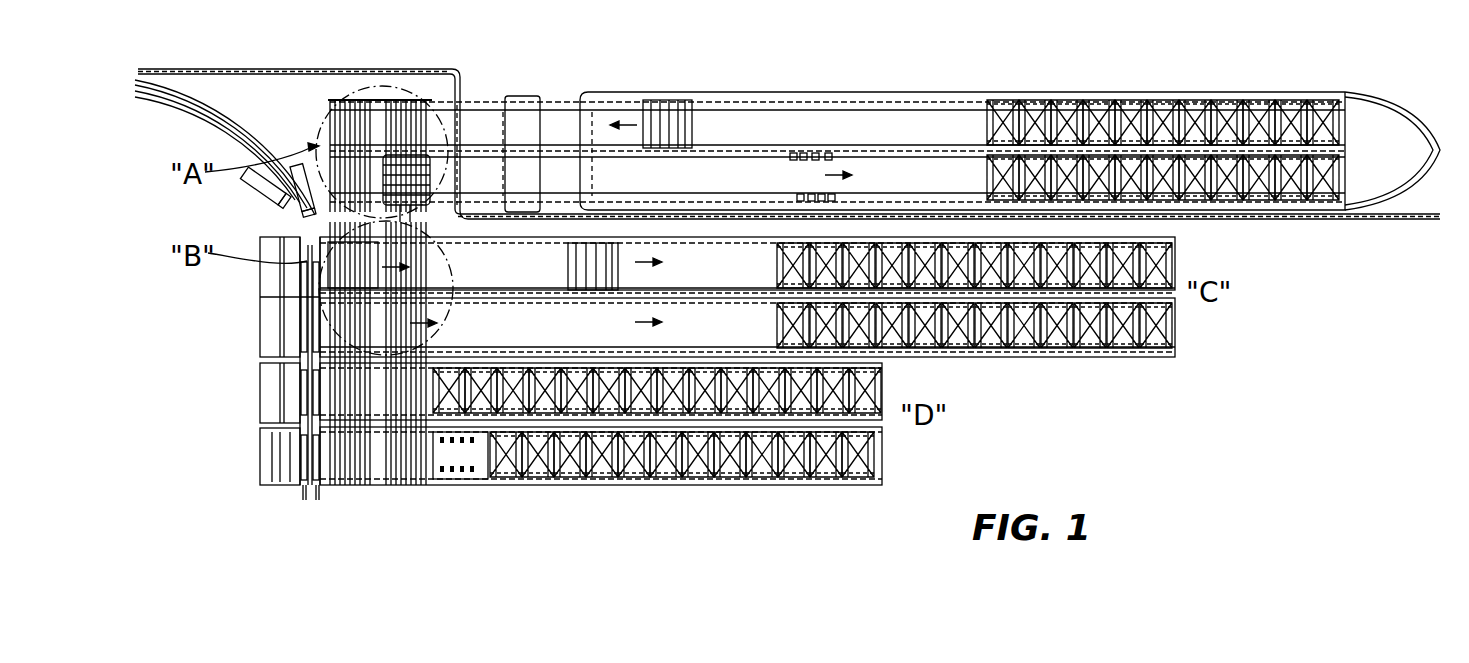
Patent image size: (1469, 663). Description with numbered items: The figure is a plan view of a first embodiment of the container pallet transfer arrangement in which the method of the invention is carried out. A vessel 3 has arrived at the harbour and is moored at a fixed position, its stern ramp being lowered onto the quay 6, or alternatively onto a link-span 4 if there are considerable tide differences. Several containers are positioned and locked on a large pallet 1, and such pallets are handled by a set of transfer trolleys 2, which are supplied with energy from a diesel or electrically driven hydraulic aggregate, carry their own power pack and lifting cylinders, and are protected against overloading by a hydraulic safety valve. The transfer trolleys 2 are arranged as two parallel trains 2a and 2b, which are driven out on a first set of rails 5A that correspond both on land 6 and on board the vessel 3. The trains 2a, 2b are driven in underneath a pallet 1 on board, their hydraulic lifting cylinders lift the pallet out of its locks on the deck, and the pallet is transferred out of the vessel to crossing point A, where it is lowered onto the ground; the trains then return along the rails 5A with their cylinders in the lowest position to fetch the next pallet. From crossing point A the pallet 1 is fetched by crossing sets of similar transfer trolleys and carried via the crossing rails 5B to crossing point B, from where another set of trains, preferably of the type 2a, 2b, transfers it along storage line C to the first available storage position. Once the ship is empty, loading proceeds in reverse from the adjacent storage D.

The pallet 1 is at (1108, 103).
The transfer trolleys 2 is at (838, 152).
The trolley train 2a is at (827, 153).
The trolley train 2b is at (800, 193).
The vessel 3 is at (1382, 143).
The link-span 4 is at (526, 97).
The first set of rails 5A is at (453, 93).
The crossing rails 5B is at (338, 132).
The quay 6 is at (478, 98).